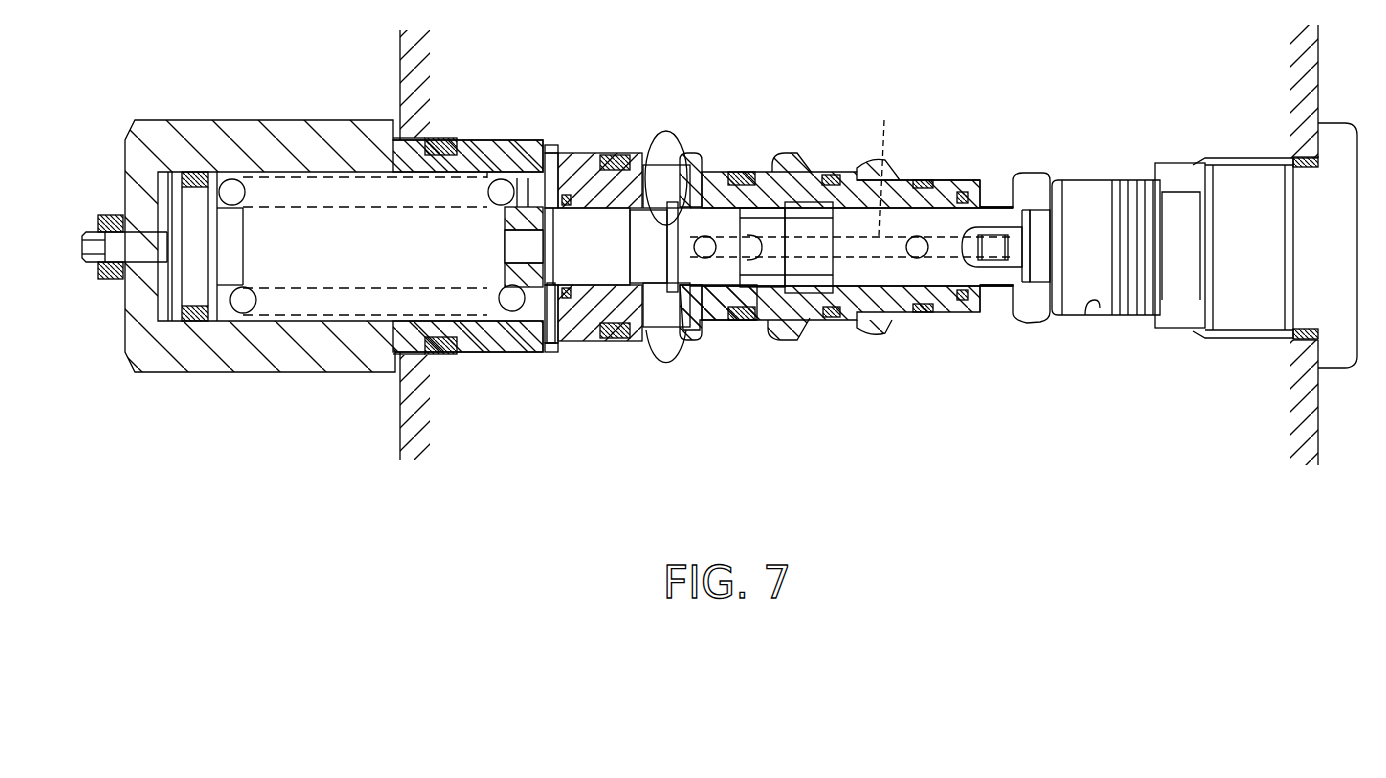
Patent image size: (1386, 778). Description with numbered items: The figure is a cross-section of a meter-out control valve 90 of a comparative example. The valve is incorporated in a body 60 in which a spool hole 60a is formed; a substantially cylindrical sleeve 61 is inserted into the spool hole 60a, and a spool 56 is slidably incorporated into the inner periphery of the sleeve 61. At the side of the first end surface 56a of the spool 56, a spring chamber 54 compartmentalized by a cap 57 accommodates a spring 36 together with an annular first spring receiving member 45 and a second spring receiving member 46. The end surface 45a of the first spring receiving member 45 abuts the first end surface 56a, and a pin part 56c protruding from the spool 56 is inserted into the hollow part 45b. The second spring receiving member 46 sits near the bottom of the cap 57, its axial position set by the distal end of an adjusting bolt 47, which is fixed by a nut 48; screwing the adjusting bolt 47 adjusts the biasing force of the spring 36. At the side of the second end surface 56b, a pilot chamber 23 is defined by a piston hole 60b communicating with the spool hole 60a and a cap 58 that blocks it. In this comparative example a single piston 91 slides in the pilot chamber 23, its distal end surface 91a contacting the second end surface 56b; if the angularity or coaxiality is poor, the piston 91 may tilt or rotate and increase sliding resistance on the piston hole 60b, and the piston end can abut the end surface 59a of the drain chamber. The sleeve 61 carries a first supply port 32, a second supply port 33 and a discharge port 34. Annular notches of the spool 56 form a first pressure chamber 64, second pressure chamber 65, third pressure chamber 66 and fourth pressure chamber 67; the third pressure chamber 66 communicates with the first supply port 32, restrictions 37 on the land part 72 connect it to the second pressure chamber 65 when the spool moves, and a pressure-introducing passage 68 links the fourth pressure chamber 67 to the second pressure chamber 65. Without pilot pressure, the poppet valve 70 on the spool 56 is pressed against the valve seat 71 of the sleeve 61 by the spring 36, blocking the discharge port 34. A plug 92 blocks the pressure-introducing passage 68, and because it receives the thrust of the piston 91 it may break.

The pilot chamber 23 is at (1177, 178).
The first supply port 32 is at (783, 303).
The second supply port 33 is at (875, 320).
The discharge port 34 is at (665, 318).
The spring 36 is at (233, 190).
The restrictions 37 is at (747, 235).
The first spring receiving member 45 is at (542, 352).
The end surface 45a is at (567, 280).
The hollow part 45b is at (518, 250).
The second spring receiving member 46 is at (198, 202).
The adjusting bolt 47 is at (110, 215).
The nut 48 is at (110, 279).
The spring chamber 54 is at (298, 233).
The spool 56 is at (634, 200).
The first end surface 56a is at (528, 190).
The second end surface 56b is at (1025, 247).
The pin part 56c is at (537, 242).
The cap 57 is at (363, 137).
The cap 58 is at (1249, 178).
The end surface 59a is at (1018, 303).
The body 60 is at (1318, 48).
The spool hole 60a is at (950, 183).
The piston hole 60b is at (1088, 300).
The sleeve 61 is at (903, 197).
The first pressure chamber 64 is at (648, 295).
The second pressure chamber 65 is at (728, 285).
The third pressure chamber 66 is at (832, 310).
The fourth pressure chamber 67 is at (923, 305).
The pressure-introducing passage 68 is at (886, 165).
The poppet valve 70 is at (657, 223).
The valve seat 71 is at (692, 153).
The land part 72 is at (772, 225).
The meter-out control valve 90 is at (838, 132).
The piston 91 is at (1093, 190).
The distal end surface 91a is at (1023, 275).
The plug 92 is at (993, 248).